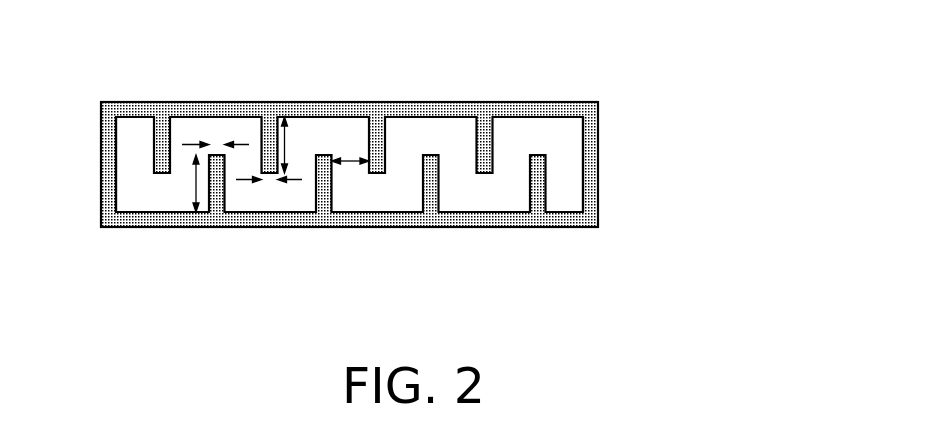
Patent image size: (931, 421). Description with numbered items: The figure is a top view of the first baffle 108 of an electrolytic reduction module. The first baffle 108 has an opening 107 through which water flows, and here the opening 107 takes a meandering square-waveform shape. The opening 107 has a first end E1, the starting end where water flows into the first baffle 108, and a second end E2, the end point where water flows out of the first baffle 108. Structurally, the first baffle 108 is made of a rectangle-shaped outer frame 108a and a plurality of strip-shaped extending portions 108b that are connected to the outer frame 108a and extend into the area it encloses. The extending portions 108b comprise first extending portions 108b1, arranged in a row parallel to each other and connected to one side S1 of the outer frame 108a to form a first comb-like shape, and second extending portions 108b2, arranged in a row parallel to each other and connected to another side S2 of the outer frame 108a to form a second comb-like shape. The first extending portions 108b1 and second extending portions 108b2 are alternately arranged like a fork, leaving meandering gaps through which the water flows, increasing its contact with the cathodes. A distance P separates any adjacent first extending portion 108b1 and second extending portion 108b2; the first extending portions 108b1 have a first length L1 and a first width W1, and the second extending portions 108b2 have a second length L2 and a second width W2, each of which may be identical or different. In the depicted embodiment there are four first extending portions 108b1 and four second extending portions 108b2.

The opening 107 is at (556, 141).
The first baffle 108 is at (440, 150).
The outer frame 108a is at (598, 154).
The extending portions 108b is at (434, 150).
The first extending portions 108b1 is at (217, 188).
The second extending portions 108b2 is at (266, 136).
The first end E1 is at (137, 126).
The second end E2 is at (565, 205).
The side S1 is at (380, 220).
The another side S2 is at (412, 108).
The first width W1 is at (205, 144).
The second width W2 is at (273, 184).
The first length L1 is at (193, 182).
The second length L2 is at (288, 135).
The distance P is at (348, 158).